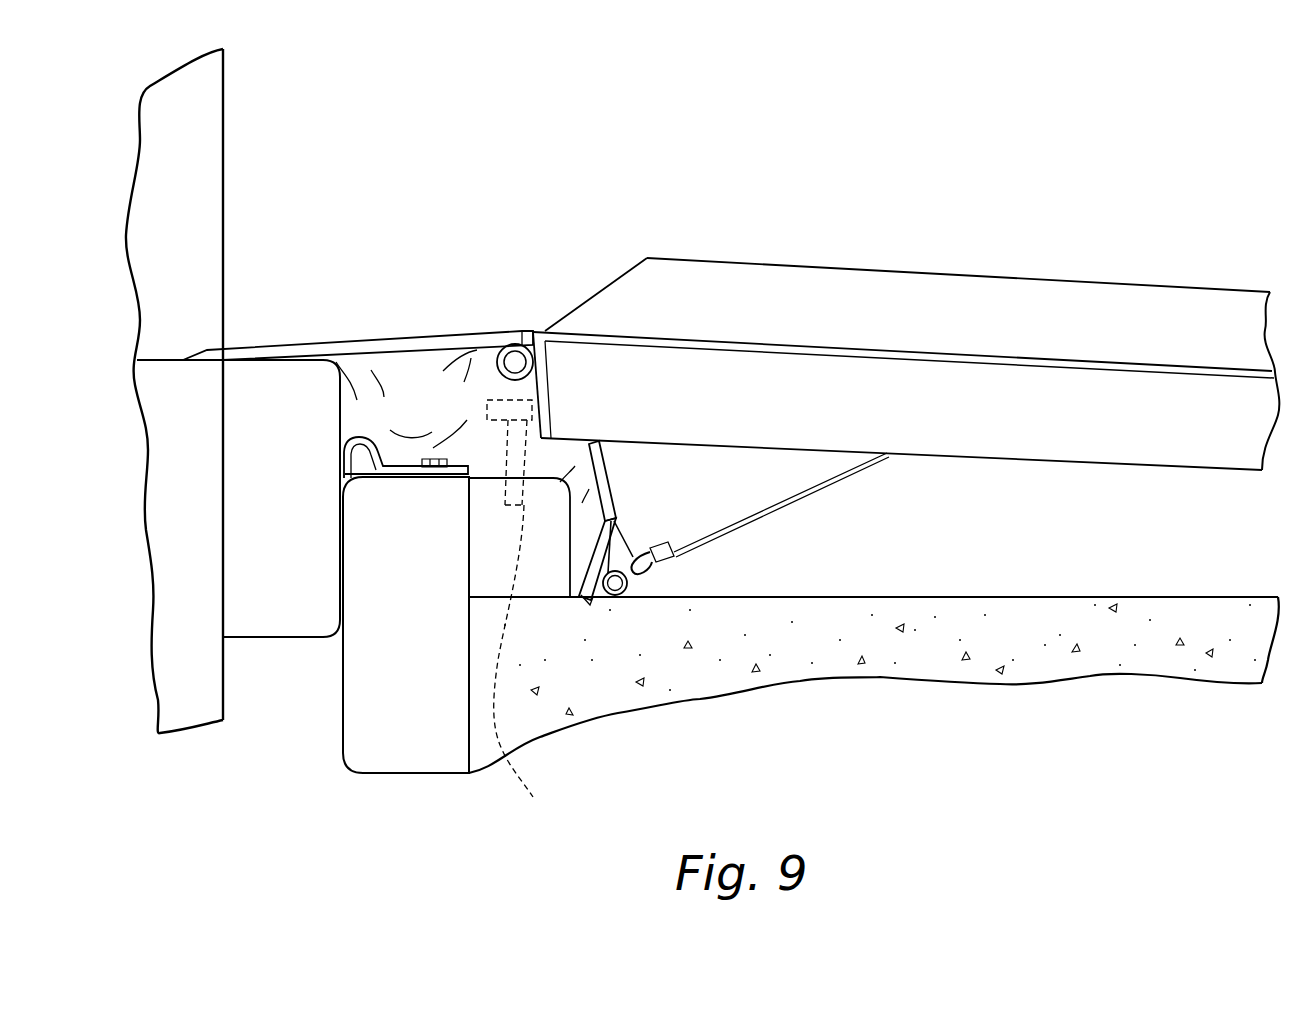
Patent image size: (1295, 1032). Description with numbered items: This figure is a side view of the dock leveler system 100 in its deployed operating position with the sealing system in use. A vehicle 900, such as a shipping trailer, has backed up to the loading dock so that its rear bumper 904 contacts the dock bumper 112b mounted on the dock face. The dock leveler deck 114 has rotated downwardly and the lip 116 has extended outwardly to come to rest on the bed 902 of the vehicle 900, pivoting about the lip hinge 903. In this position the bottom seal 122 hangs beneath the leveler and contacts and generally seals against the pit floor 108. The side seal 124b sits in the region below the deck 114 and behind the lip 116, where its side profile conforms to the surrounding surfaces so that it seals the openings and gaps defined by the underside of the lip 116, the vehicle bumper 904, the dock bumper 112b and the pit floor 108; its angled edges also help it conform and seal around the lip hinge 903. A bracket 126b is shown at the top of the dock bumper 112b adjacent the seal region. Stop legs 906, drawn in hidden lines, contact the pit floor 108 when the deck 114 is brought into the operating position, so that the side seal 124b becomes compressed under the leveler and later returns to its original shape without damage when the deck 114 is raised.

The dock leveler system 100 is at (893, 163).
The pit floor 108 is at (828, 597).
The dock bumper 112b is at (336, 730).
The dock leveler deck 114 is at (1070, 283).
The lip 116 is at (276, 344).
The bottom seal 122 is at (610, 493).
The side seal 124b is at (428, 383).
The mounting bracket 126b is at (350, 479).
The vehicle 900 is at (148, 620).
The bed 902 is at (160, 358).
The lip hinge 903 is at (521, 344).
The rear bumper 904 is at (254, 640).
The stop legs 906 is at (528, 606).